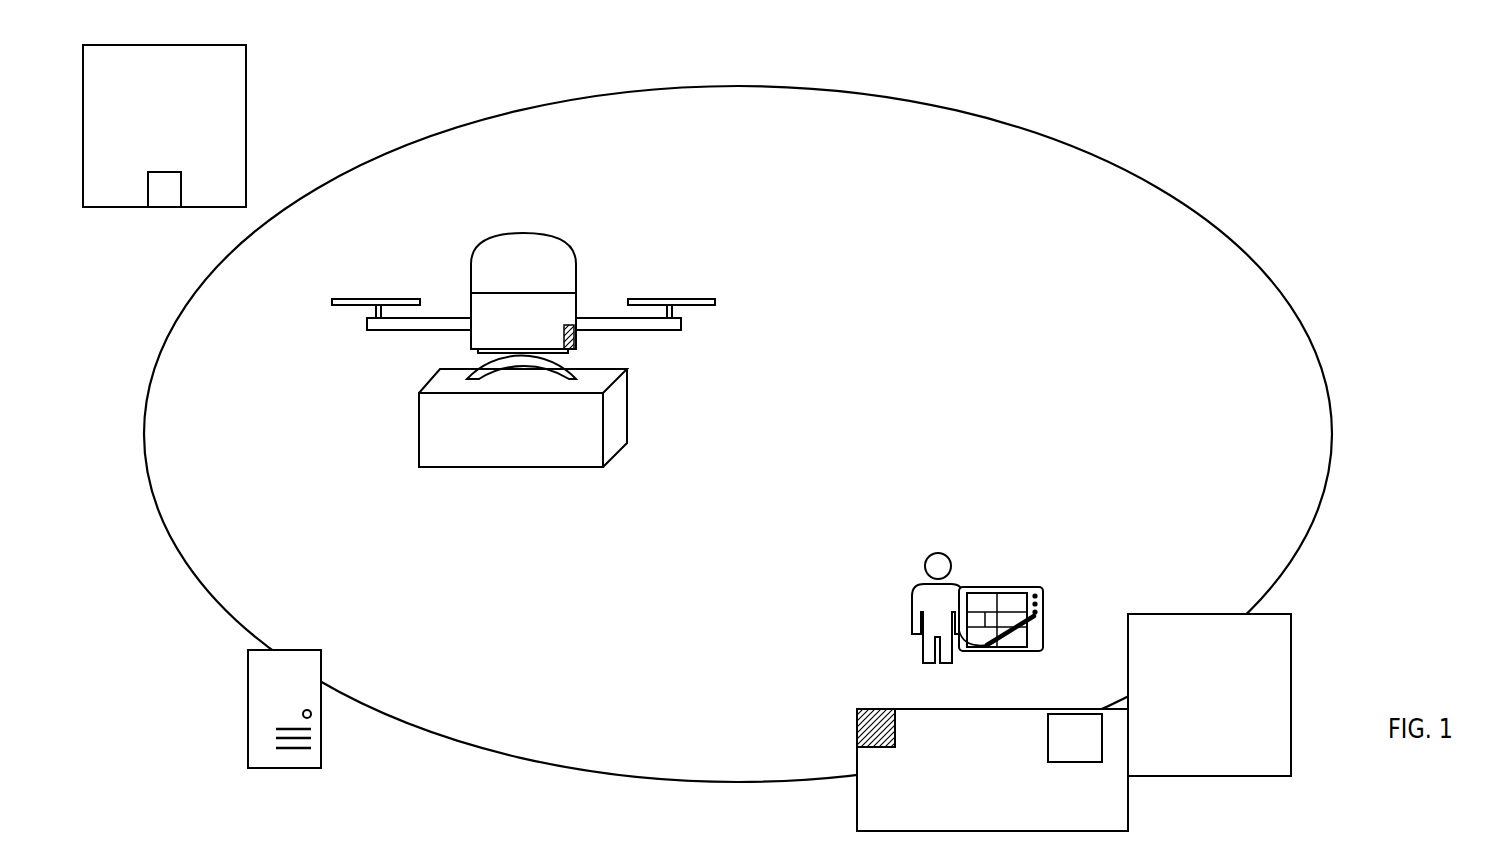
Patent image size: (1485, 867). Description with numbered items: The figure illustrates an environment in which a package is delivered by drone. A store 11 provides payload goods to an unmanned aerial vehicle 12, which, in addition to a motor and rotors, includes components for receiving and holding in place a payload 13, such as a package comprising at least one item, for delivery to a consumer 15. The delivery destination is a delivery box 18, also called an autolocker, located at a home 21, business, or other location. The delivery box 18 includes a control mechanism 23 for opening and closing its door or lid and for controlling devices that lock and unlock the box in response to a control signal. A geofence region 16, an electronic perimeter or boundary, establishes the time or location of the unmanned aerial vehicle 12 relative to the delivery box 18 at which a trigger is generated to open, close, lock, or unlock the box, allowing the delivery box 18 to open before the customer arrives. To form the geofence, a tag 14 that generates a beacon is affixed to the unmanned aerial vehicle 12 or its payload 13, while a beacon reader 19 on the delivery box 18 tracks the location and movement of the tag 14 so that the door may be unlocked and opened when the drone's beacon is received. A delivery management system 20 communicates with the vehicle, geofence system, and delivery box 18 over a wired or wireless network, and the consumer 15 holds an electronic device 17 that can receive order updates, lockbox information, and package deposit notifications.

The store 11 is at (179, 118).
The unmanned aerial vehicle 12 is at (681, 332).
The payload 13 is at (623, 393).
The tag 14 is at (566, 325).
The consumer 15 is at (948, 548).
The geofence region 16 is at (1103, 276).
The electronic device 17 is at (1045, 606).
The delivery box 18 is at (1010, 818).
The beacon reader 19 is at (862, 708).
The delivery management system 20 is at (295, 701).
The home 21 is at (1223, 702).
The control mechanism 23 is at (1075, 738).